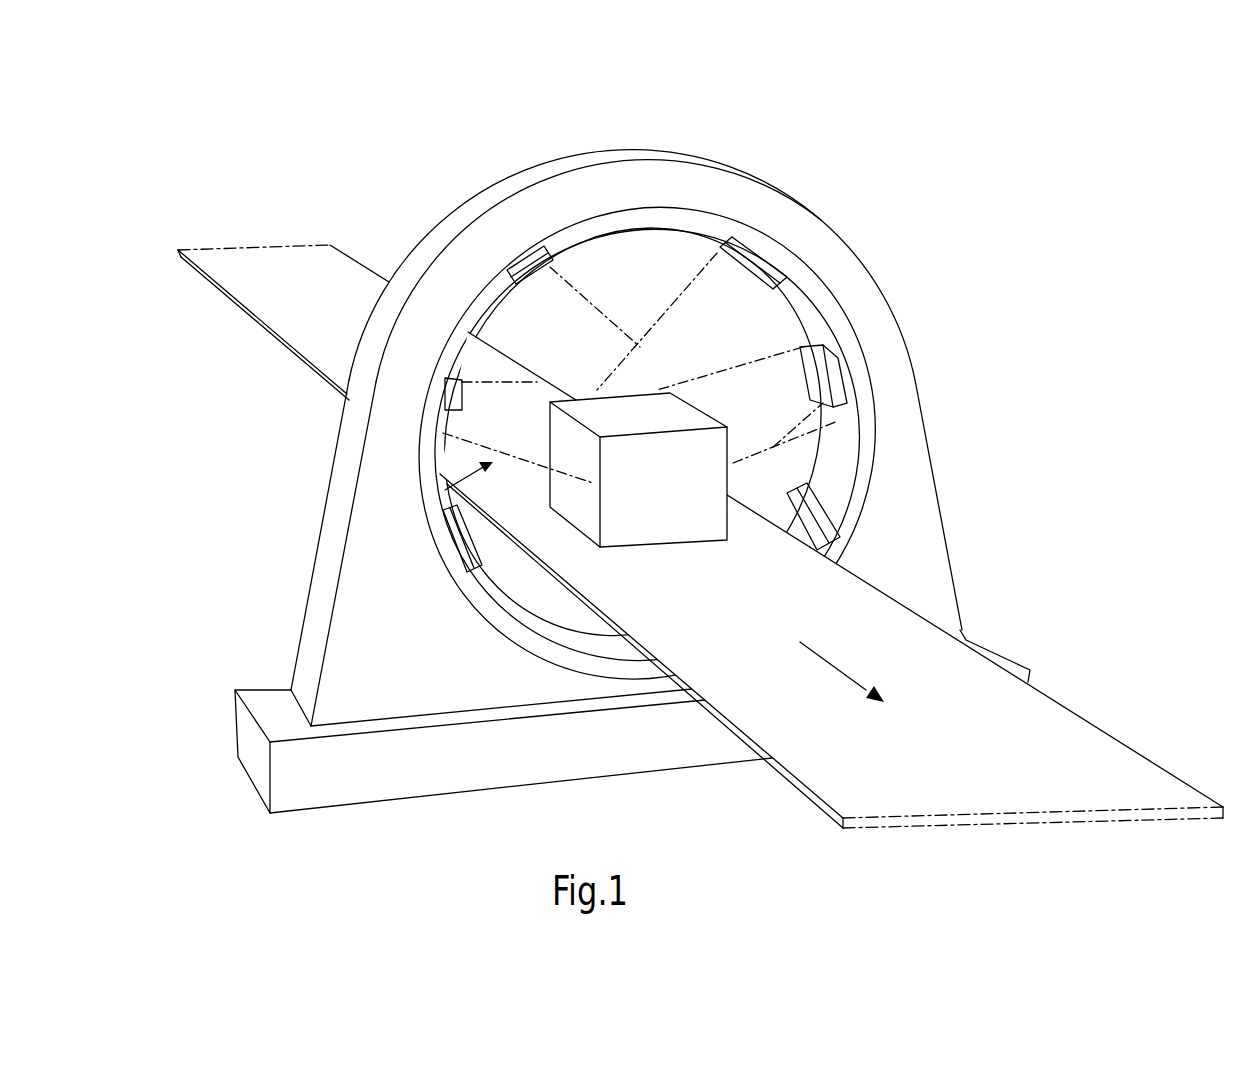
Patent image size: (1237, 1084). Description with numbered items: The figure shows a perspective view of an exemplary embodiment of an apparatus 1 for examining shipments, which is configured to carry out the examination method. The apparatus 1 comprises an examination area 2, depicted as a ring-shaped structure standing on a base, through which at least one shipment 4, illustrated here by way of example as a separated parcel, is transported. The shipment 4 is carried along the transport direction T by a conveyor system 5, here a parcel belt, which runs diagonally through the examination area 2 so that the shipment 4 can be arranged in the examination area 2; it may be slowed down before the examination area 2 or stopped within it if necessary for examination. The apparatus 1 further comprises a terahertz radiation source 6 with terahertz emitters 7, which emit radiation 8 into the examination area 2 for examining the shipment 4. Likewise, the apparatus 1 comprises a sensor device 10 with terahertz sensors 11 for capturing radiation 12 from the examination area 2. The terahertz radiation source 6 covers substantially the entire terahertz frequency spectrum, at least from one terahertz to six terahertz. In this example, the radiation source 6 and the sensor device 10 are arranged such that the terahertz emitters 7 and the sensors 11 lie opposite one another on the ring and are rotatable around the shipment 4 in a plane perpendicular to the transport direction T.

The apparatus 1 is at (952, 161).
The examination area 2 is at (645, 262).
The shipment 4 is at (670, 500).
The conveyor system 5 is at (1073, 737).
The terahertz radiation source 6 is at (426, 346).
The terahertz emitters 7 is at (565, 390).
The radiation 8 is at (448, 508).
The sensor device 10 is at (856, 296).
The terahertz sensors 11 is at (763, 267).
The radiation 12 is at (828, 454).